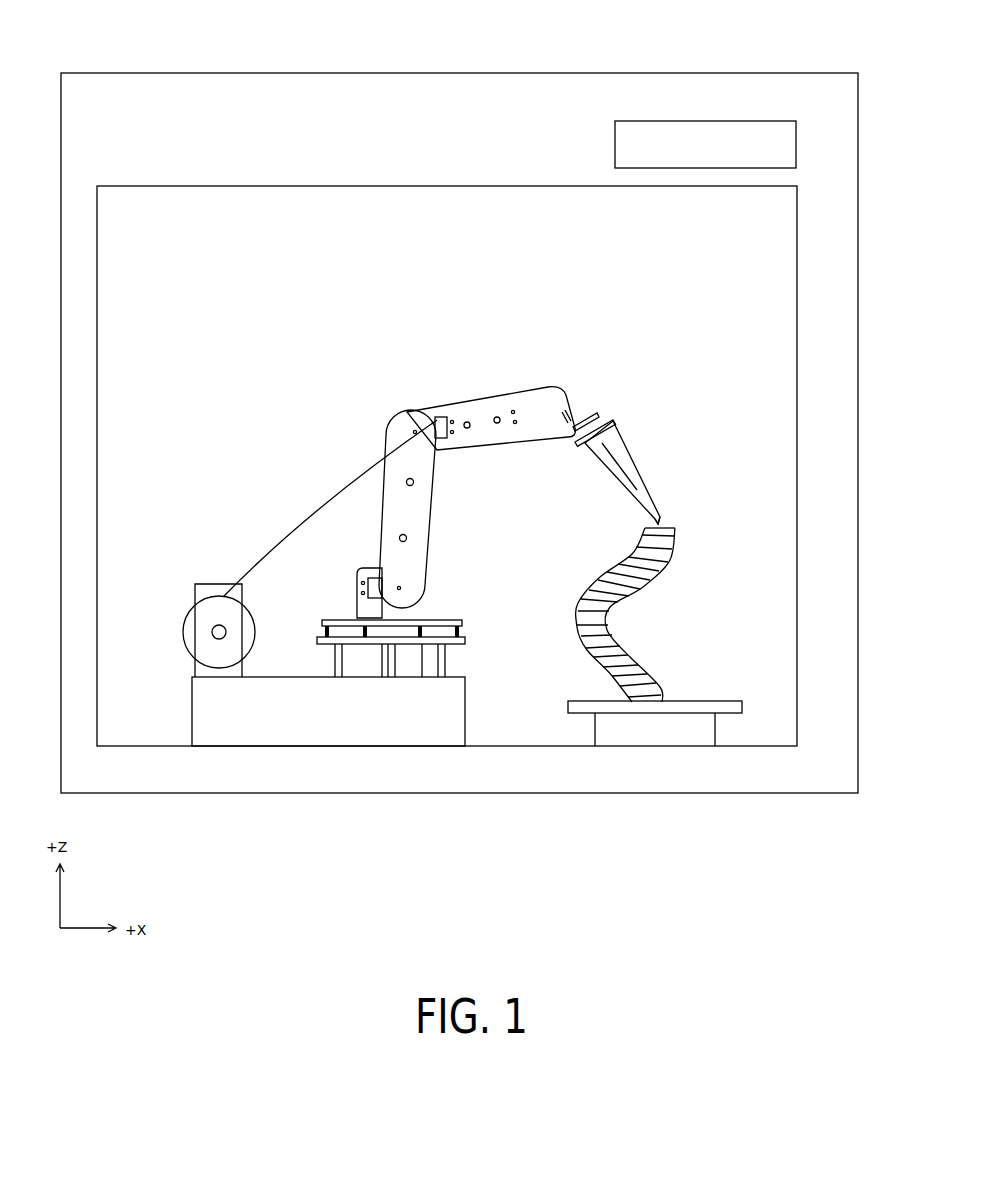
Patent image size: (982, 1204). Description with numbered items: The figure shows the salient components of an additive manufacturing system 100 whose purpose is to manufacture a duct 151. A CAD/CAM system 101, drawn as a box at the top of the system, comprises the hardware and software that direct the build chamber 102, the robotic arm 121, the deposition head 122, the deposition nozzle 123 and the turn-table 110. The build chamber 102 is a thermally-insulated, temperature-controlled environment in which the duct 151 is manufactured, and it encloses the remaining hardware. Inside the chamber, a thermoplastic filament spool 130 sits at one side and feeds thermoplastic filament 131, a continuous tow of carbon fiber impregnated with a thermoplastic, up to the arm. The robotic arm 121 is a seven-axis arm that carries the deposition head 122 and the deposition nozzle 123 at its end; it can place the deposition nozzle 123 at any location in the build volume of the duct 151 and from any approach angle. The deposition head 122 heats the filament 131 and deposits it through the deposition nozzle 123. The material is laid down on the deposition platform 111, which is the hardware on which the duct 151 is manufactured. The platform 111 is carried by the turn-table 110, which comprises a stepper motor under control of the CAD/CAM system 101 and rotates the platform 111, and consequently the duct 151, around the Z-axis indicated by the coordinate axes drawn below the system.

The additive manufacturing system 100 is at (93, 73).
The CAD/CAM system 101 is at (648, 121).
The build chamber 102 is at (123, 186).
The turn-table 110 is at (715, 730).
The deposition platform 111 is at (700, 701).
The robotic arm 121 is at (418, 518).
The deposition head 122 is at (642, 477).
The deposition nozzle 123 is at (662, 517).
The thermoplastic filament spool 130 is at (183, 630).
The thermoplastic filament 131 is at (287, 532).
The duct 151 is at (607, 633).